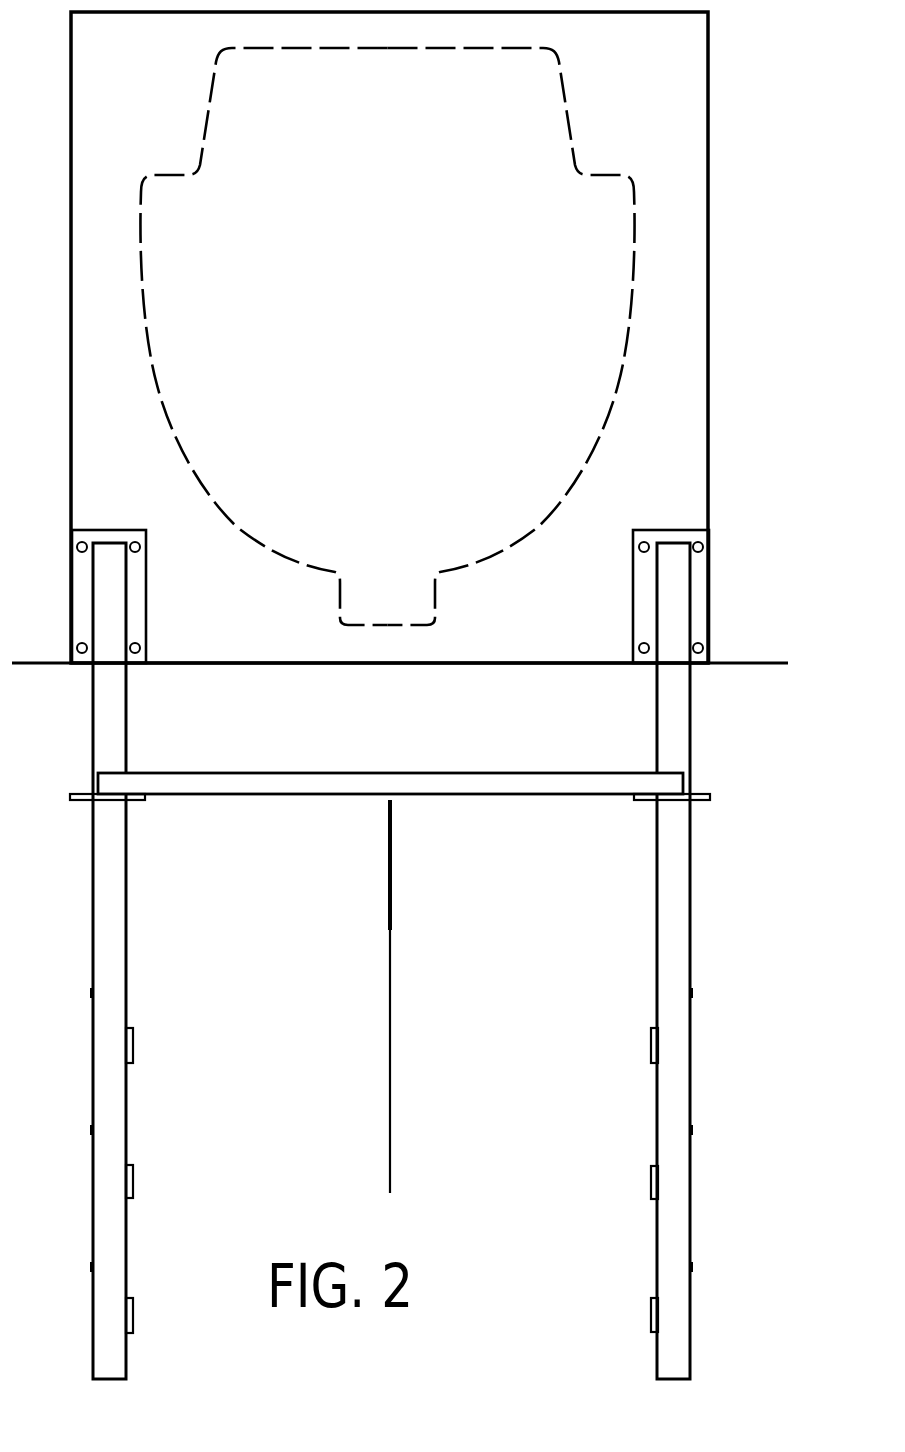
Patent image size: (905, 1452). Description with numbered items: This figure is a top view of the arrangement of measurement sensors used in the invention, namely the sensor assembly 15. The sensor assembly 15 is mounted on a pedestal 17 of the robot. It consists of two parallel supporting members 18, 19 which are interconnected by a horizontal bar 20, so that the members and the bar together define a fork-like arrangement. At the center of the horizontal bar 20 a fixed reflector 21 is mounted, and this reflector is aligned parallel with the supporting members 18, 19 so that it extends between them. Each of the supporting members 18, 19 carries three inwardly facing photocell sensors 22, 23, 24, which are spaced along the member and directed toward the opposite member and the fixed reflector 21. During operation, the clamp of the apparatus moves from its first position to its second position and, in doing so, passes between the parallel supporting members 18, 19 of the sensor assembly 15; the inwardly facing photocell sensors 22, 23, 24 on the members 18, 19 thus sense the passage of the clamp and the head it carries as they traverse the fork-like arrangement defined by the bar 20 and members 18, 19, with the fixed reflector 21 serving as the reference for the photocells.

The sensor assembly 15 is at (681, 717).
The pedestal 17 is at (694, 480).
The supporting member 18 is at (683, 905).
The supporting member 19 is at (93, 898).
The horizontal bar 20 is at (315, 773).
The fixed reflector 21 is at (391, 1016).
The photocell sensor 22 is at (133, 1312).
The photocell sensor 23 is at (133, 1177).
The photocell sensor 24 is at (130, 1040).